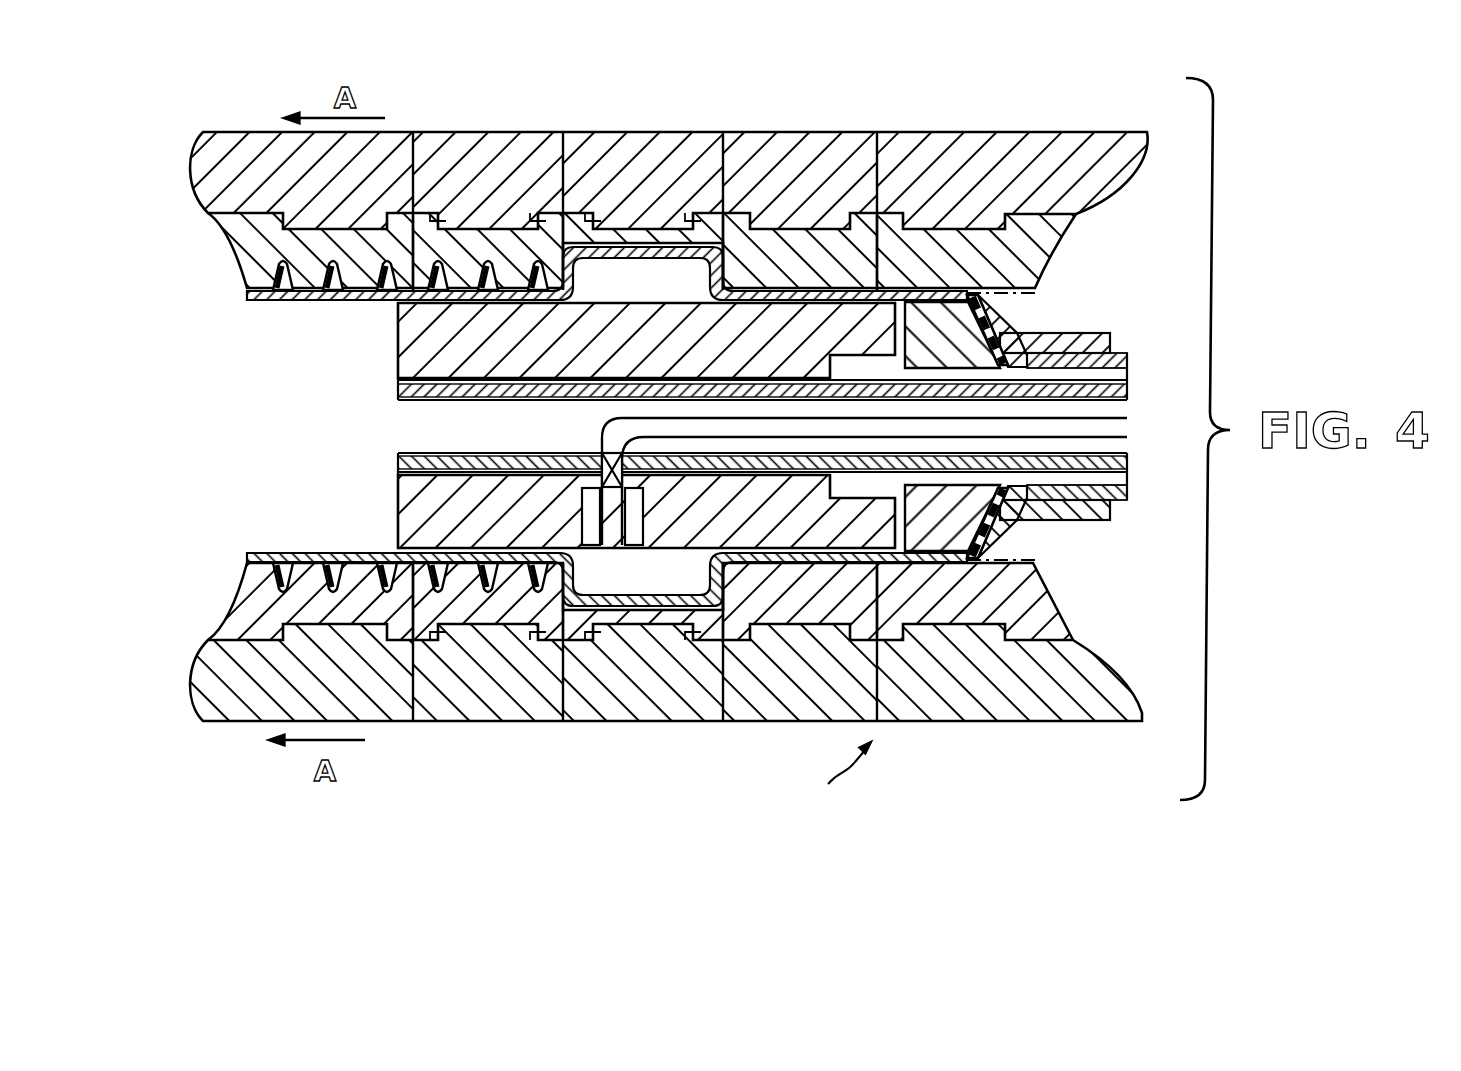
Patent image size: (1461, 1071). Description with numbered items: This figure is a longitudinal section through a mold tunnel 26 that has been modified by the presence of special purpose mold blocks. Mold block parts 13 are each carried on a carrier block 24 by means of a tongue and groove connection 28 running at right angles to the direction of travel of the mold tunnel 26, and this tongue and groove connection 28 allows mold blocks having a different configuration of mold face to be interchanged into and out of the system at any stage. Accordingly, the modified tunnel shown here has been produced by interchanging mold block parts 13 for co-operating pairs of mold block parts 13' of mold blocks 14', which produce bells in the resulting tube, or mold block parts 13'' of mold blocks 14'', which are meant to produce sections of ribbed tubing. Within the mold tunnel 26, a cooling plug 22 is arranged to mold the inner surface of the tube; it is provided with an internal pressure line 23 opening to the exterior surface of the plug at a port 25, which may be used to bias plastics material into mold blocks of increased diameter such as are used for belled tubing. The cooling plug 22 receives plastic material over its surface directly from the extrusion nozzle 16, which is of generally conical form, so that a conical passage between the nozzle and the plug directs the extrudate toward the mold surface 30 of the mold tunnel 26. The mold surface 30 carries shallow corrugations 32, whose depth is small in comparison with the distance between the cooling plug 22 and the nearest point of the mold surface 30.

The mold block parts 13 is at (585, 426).
The mold block parts of mold blocks 14' 13' is at (639, 431).
The mold block parts of mold blocks 14'' 13'' is at (500, 427).
The mold blocks 14' is at (668, 431).
The mold blocks 14'' is at (471, 428).
The extrusion nozzle 16 is at (975, 300).
The cooling plug 22 is at (405, 485).
The internal pressure line 23 is at (1120, 425).
The carrier block 24 is at (247, 147).
The port 25 is at (612, 548).
The mold tunnel 26 is at (833, 783).
The tongue and groove connection 28 is at (640, 252).
The mold surface 30 is at (837, 290).
The corrugations 32 is at (280, 267).